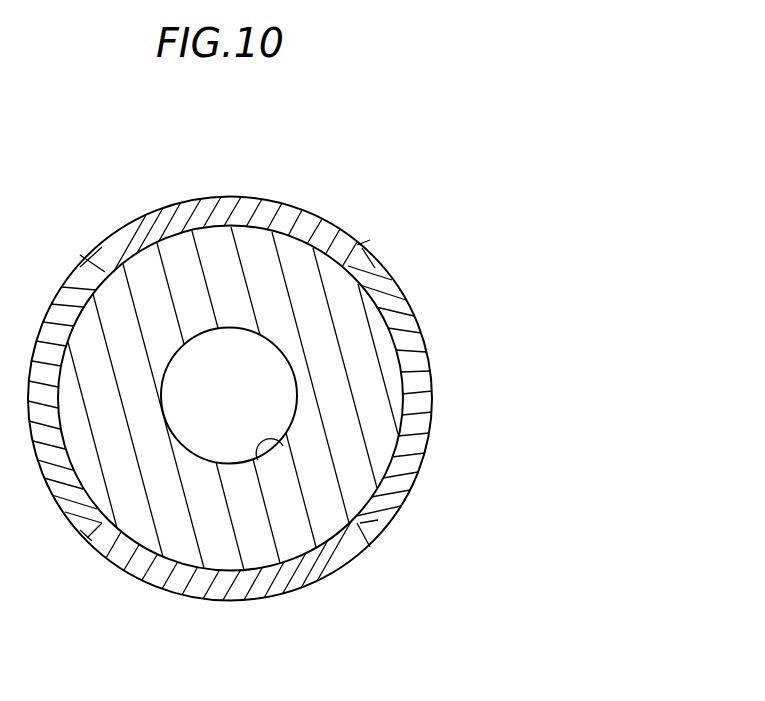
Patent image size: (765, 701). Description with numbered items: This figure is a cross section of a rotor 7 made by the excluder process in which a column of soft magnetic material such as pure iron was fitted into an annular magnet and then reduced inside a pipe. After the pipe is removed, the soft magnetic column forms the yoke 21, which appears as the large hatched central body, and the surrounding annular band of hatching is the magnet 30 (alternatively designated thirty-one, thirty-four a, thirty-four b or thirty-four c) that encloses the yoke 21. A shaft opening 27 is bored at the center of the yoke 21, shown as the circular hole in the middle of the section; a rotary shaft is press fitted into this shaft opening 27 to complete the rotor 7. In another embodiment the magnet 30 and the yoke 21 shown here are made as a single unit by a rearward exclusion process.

The rotor 7 is at (320, 207).
The magnet 30 is at (355, 250).
The yoke 21 is at (378, 454).
The shaft opening 27 is at (258, 460).